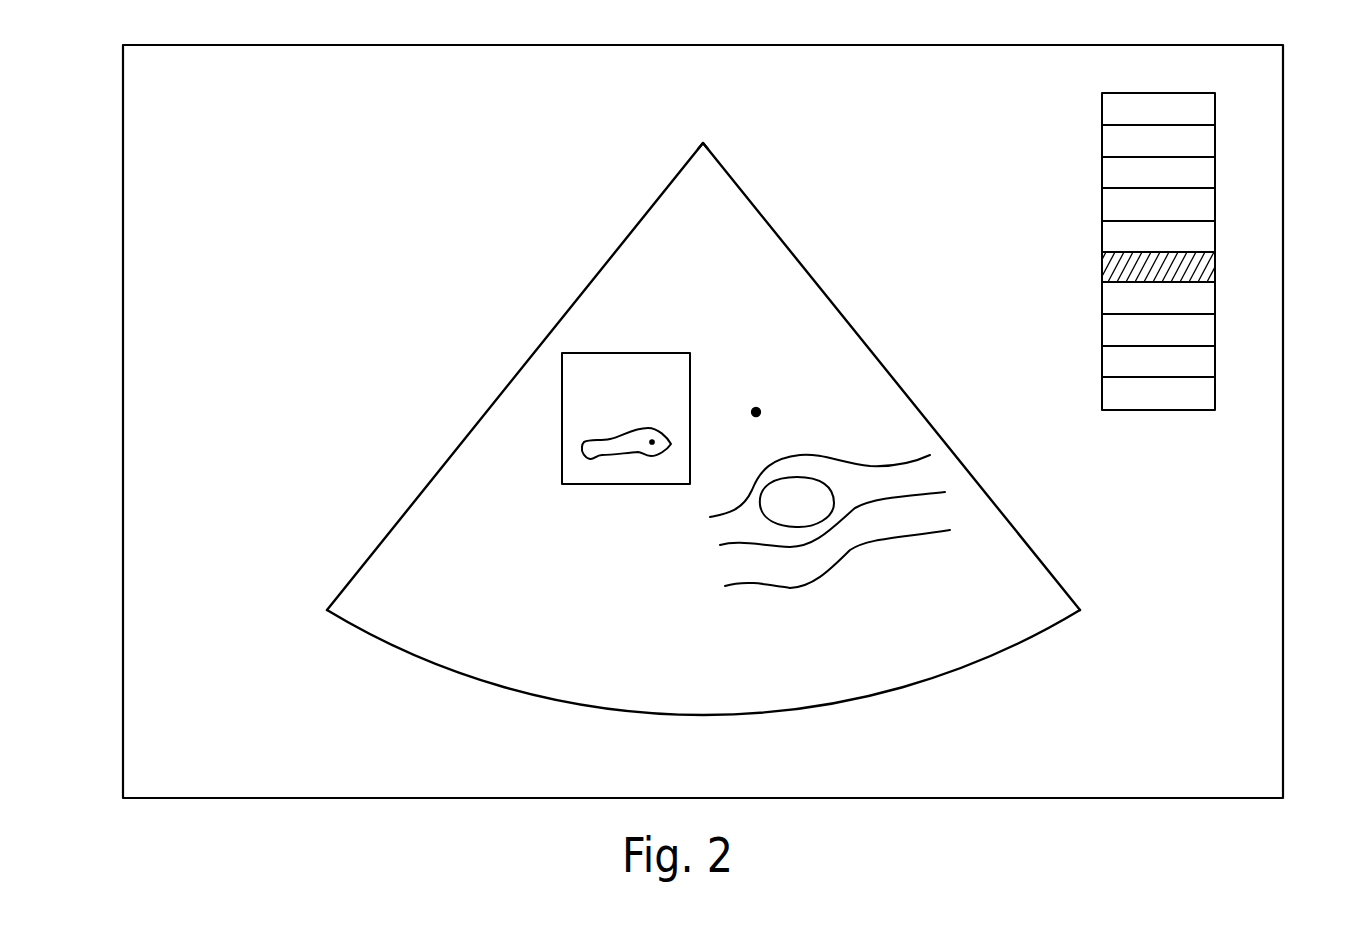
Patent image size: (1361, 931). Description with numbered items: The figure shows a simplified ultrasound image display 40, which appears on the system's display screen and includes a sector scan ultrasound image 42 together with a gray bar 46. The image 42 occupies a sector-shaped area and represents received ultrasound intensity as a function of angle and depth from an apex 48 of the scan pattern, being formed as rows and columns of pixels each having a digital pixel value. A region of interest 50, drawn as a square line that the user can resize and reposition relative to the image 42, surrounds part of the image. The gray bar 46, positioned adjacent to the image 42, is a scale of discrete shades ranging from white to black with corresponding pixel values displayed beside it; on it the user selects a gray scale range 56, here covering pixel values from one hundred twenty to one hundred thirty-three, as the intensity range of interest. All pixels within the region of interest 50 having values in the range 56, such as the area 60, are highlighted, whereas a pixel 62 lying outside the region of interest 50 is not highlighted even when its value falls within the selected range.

The image display 40 is at (1284, 318).
The sector scan ultrasound image 42 is at (859, 324).
The gray bar 46 is at (1220, 219).
The apex 48 is at (703, 143).
The region of interest 50 is at (613, 351).
The gray scale range 56 is at (1100, 267).
The area 60 is at (608, 440).
The pixel 62 is at (756, 407).